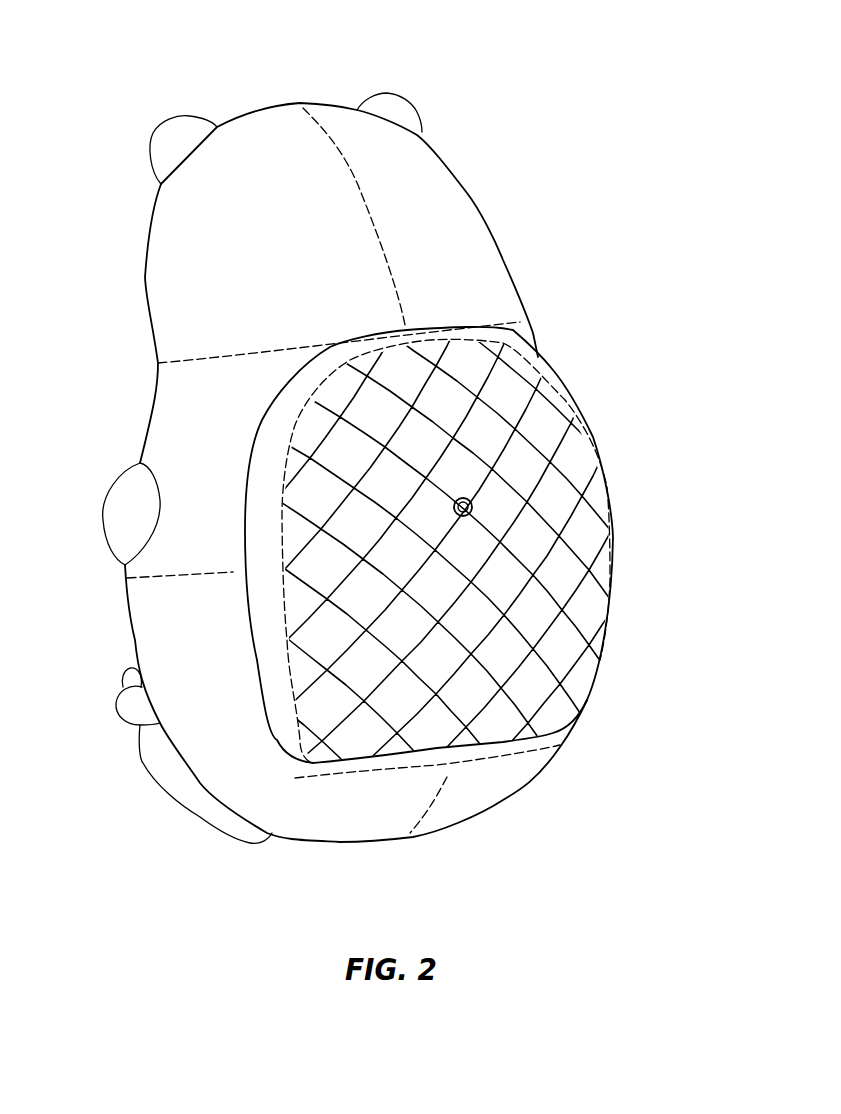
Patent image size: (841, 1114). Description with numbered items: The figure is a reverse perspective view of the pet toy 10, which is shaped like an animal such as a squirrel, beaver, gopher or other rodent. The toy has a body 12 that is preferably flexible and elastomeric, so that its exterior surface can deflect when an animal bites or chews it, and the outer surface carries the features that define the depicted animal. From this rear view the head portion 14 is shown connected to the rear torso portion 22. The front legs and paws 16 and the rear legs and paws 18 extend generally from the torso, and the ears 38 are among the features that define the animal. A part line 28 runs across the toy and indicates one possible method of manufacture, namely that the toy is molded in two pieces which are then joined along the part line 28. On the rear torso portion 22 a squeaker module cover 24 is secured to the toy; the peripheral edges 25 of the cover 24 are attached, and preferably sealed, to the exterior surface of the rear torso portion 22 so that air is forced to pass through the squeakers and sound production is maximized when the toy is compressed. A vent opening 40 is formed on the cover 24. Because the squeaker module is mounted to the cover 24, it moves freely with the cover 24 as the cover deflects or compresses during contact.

The pet toy 10 is at (716, 243).
The body 12 is at (547, 272).
The head portion 14 is at (268, 256).
The front legs and paws 16 is at (117, 522).
The rear legs and paws 18 is at (180, 783).
The rear torso portion 22 is at (206, 659).
The squeaker module cover 24 is at (570, 633).
The peripheral edges 25 is at (250, 430).
The part line 28 is at (373, 210).
The ears 38 is at (178, 133).
The vent opening 40 is at (473, 502).